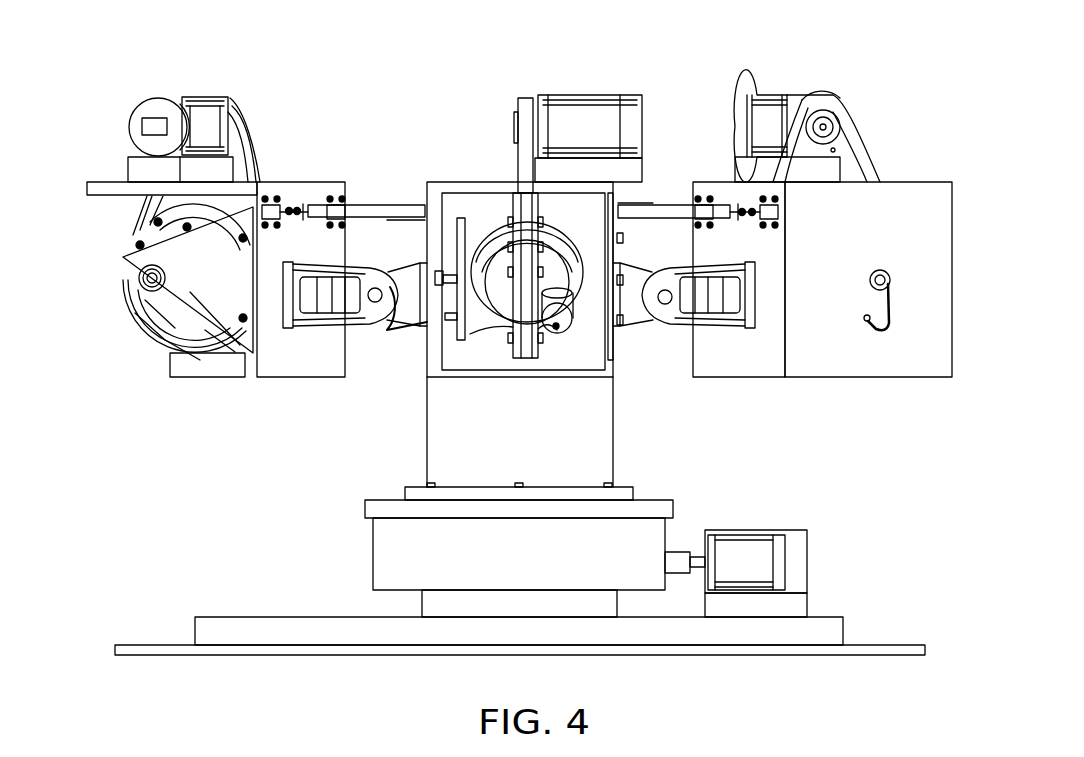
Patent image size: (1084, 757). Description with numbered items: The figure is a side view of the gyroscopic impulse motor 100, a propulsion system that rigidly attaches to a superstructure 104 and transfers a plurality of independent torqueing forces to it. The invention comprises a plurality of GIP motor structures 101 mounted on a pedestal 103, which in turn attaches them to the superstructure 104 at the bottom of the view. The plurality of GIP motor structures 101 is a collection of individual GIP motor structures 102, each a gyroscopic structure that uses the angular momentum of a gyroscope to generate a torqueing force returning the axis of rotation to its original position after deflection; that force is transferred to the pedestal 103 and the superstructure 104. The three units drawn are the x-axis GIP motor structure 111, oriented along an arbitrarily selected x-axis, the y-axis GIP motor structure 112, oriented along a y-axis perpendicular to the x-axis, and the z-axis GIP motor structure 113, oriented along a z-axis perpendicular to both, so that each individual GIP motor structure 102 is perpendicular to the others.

The gyroscopic impulse motor 100 is at (105, 82).
The plurality of GIP motor structures 101 is at (737, 118).
The individual GIP motor structure 102 is at (613, 430).
The pedestal 103 is at (195, 627).
The superstructure 104 is at (873, 645).
The x-axis GIP motor structure 111 is at (217, 378).
The y-axis GIP motor structure 112 is at (458, 377).
The z-axis GIP motor structure 113 is at (905, 378).